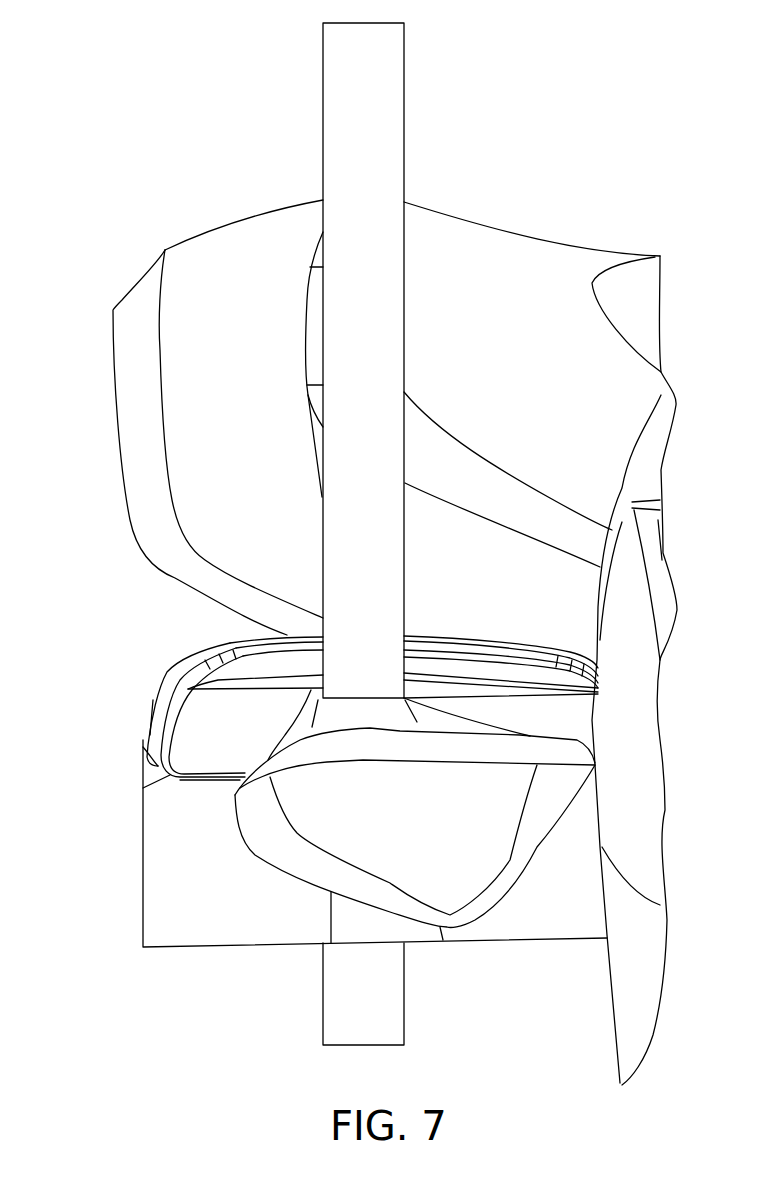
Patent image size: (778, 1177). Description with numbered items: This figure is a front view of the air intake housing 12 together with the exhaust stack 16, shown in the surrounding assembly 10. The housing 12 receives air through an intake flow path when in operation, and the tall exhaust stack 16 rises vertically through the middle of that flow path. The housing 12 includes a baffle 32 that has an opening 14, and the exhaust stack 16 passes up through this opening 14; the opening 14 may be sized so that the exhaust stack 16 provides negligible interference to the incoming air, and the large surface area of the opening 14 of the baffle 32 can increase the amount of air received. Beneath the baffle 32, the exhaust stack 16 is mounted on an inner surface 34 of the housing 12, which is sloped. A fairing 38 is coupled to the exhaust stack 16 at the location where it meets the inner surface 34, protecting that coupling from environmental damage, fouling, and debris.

The vehicle body 10 is at (522, 247).
The exhaust stack 16 is at (345, 113).
The opening 14 is at (505, 665).
The baffle 32 is at (203, 652).
The air intake housing 12 is at (153, 730).
The inner surface 34 is at (225, 750).
The fairing 38 is at (302, 733).